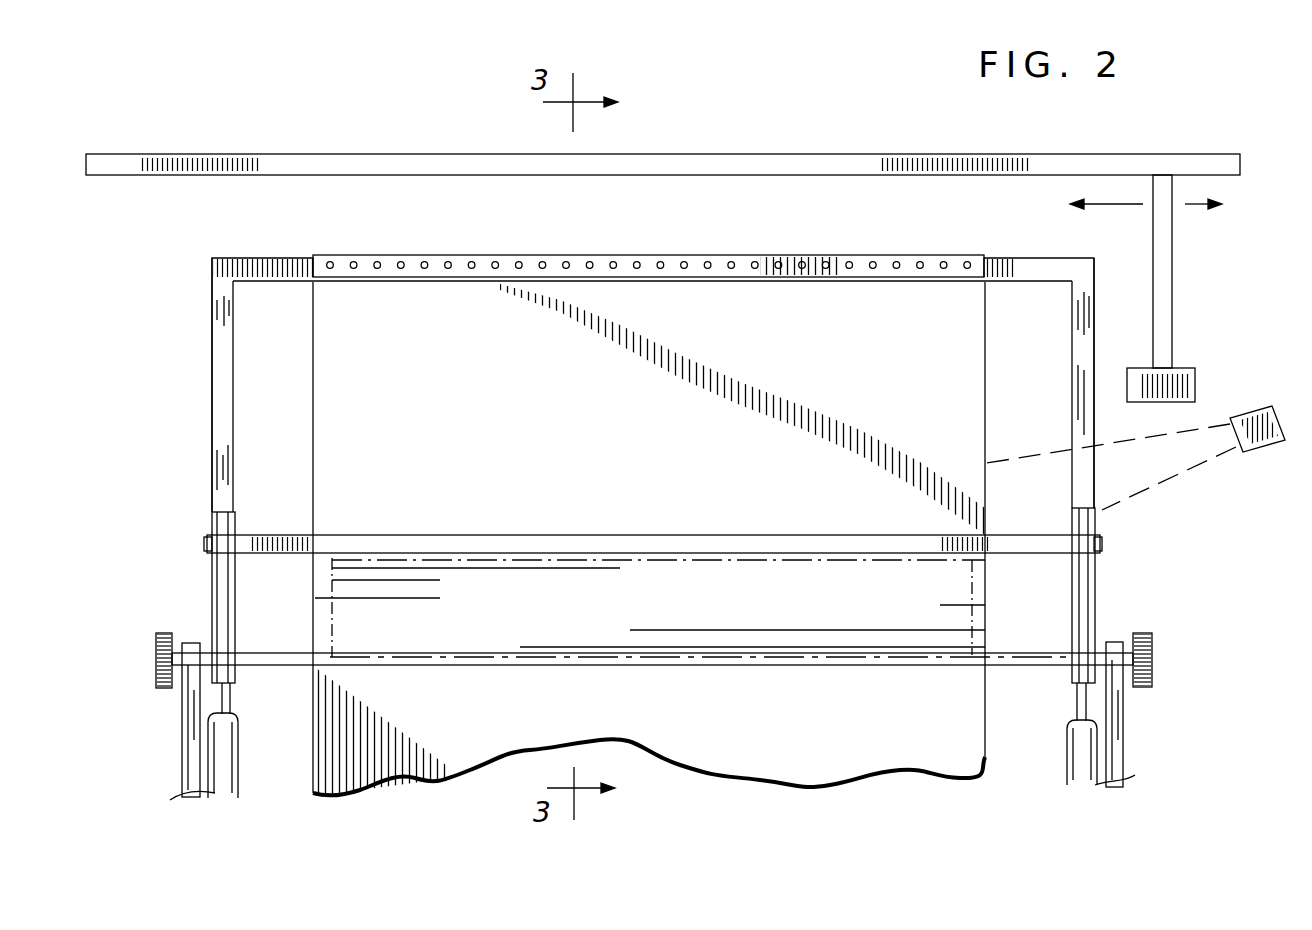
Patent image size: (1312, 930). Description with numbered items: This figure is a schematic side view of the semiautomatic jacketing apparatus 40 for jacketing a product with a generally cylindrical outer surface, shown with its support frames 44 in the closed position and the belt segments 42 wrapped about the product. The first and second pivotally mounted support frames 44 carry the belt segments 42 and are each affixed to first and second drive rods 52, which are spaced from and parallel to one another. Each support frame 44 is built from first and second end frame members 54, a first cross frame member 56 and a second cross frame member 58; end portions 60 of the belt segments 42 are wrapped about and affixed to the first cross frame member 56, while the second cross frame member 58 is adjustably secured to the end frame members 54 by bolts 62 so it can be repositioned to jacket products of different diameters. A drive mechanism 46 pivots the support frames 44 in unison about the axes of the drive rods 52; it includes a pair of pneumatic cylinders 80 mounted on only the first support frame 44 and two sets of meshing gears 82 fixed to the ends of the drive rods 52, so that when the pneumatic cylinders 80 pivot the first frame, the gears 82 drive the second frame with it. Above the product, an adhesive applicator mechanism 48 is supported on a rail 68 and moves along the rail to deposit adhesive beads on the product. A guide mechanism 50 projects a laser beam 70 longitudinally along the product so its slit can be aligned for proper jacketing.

The semiautomatic jacketing apparatus 40 is at (250, 114).
The belt segments 42 is at (648, 409).
The support frames 44 is at (1110, 568).
The drive mechanism 46 is at (168, 725).
The adhesive applicator mechanism 48 is at (1172, 322).
The guide mechanism 50 is at (1252, 408).
The drive rods 52 is at (940, 668).
The end frame members 54 is at (222, 395).
The first cross frame member 56 is at (278, 212).
The second cross frame member 58 is at (668, 535).
The end portions 60 is at (718, 260).
The bolts 62 is at (206, 542).
The rail 68 is at (773, 166).
The laser beam 70 is at (1165, 448).
The pneumatic cylinders 80 is at (238, 733).
The meshing gears 82 is at (162, 633).